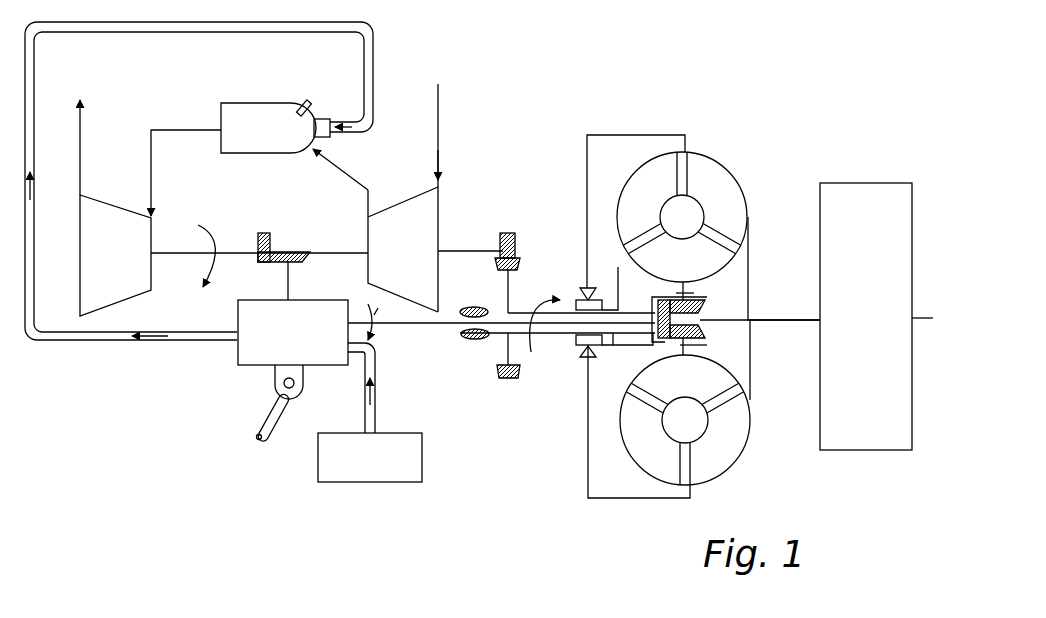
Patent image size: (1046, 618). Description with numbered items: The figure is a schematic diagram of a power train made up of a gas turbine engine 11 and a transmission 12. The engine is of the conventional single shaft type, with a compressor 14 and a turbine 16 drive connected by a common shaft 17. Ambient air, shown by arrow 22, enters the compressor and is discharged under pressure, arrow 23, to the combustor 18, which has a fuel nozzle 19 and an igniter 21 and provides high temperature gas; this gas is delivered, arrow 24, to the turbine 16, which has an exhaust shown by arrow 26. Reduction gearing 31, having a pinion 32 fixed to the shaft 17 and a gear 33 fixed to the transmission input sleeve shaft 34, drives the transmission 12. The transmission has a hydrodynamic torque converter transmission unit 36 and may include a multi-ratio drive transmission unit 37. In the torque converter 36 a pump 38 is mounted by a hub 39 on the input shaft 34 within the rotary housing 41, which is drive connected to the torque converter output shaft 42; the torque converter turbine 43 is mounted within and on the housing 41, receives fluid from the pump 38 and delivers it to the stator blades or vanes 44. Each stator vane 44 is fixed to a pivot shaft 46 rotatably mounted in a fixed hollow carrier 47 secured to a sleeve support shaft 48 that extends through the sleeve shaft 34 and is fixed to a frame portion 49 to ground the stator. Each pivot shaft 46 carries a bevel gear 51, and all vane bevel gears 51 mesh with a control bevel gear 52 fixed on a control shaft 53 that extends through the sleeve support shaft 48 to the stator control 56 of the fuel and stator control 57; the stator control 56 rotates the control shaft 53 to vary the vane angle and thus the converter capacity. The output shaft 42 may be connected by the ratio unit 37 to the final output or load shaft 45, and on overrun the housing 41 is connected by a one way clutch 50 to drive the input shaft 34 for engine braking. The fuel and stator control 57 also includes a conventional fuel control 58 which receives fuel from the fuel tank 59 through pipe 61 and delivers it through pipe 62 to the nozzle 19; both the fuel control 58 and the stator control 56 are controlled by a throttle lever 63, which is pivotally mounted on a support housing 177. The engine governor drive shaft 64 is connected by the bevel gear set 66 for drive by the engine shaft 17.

The gas turbine engine 11 is at (190, 105).
The transmission 12 is at (697, 103).
The compressor 14 is at (400, 203).
The turbine 16 is at (100, 316).
The common shaft 17 is at (180, 257).
The combustor 18 is at (265, 103).
The fuel nozzle 19 is at (328, 118).
The igniter 21 is at (305, 100).
The ambient air arrow 22 is at (440, 130).
The pressurized air arrow 23 is at (340, 172).
The high temperature gas arrow 24 is at (153, 148).
The exhaust arrow 26 is at (80, 168).
The reduction gearing 31 is at (519, 254).
The pinion 32 is at (503, 240).
The gear 33 is at (505, 292).
The transmission input sleeve shaft 34 is at (512, 380).
The hydrodynamic torque converter transmission unit 36 is at (703, 152).
The multi-ratio drive transmission unit 37 is at (873, 183).
The pump 38 is at (635, 182).
The hub 39 is at (618, 268).
The rotary housing 41 is at (651, 134).
The torque converter output shaft 42 is at (795, 318).
The torque converter turbine 43 is at (735, 182).
The stator blades or vanes 44 is at (738, 258).
The final output or load shaft 45 is at (925, 320).
The pivot shaft 46 is at (705, 348).
The fixed hollow carrier 47 is at (655, 343).
The sleeve support shaft 48 is at (552, 348).
The frame portion 49 is at (463, 337).
The one way clutch 50 is at (583, 293).
The vane bevel gear 51 is at (705, 318).
The control bevel gear 52 is at (658, 312).
The control shaft 53 is at (440, 334).
The stator control 56 is at (228, 344).
The fuel and stator control 57 is at (252, 367).
The fuel control 58 is at (368, 300).
The fuel tank 59 is at (424, 455).
The pipe 61 is at (377, 392).
The pipe 62 is at (375, 82).
The throttle lever 63 is at (276, 420).
The engine governor drive shaft 64 is at (298, 285).
The bevel gear set 66 is at (258, 262).
The support housing 177 is at (300, 378).